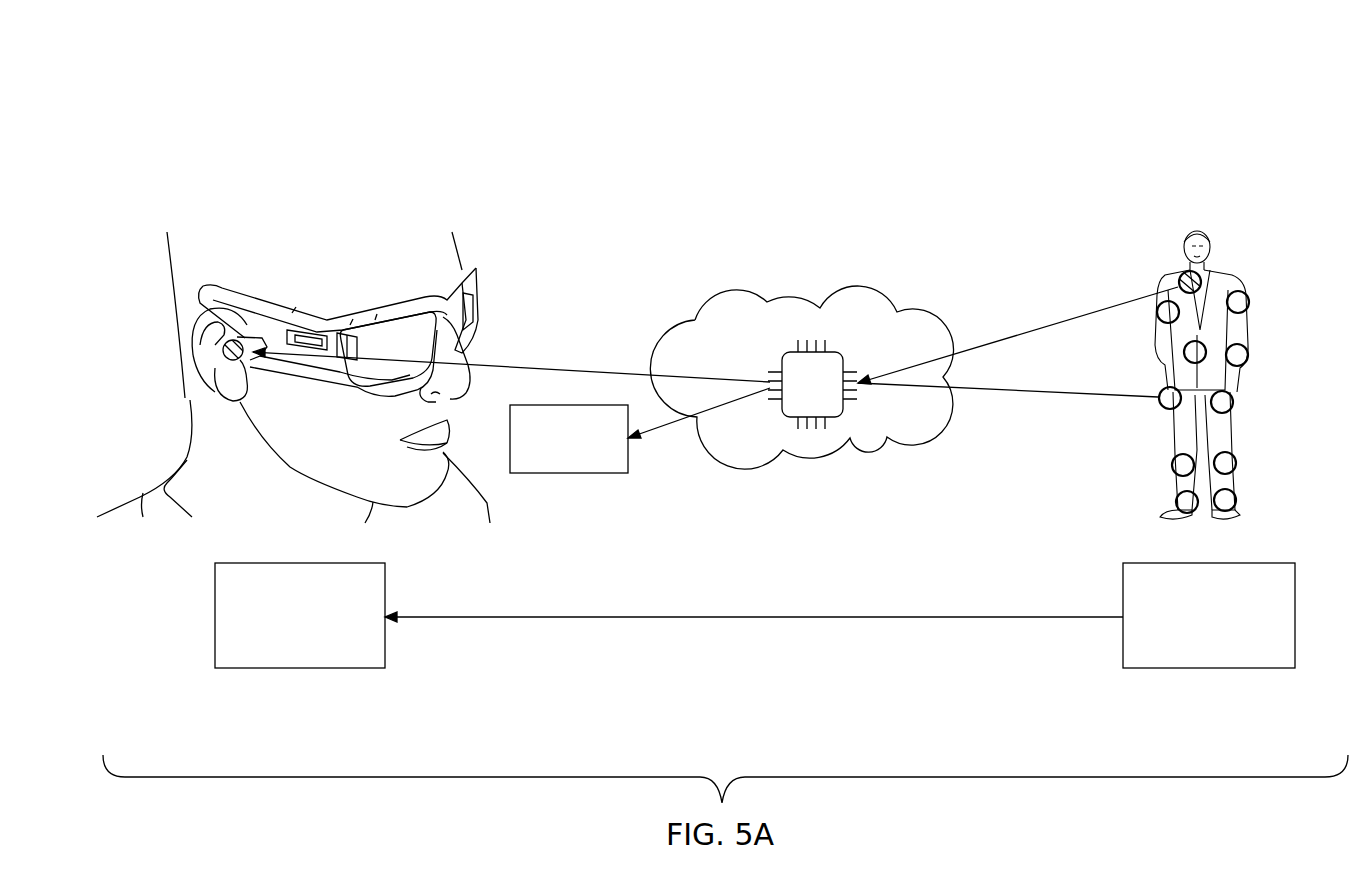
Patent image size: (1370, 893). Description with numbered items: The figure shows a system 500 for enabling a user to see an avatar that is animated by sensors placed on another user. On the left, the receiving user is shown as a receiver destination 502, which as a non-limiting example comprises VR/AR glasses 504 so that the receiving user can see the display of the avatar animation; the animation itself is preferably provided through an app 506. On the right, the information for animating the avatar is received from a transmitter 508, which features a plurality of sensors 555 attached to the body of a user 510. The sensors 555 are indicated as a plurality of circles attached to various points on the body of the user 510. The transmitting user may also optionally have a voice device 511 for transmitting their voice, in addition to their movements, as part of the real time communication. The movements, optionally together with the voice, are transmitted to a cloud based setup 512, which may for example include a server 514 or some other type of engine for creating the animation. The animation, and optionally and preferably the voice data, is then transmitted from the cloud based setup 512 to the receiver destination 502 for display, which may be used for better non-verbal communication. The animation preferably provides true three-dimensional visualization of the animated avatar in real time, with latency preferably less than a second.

The system 500 is at (880, 115).
The receiver destination 502 is at (247, 668).
The VR/AR glasses 504 is at (338, 321).
The app 506 is at (569, 439).
The transmitter 508 is at (1155, 668).
The user 510 is at (1241, 391).
The voice device 511 is at (1145, 275).
The cloud based setup 512 is at (863, 283).
The server 514 is at (812, 424).
The sensors 555 is at (1248, 353).